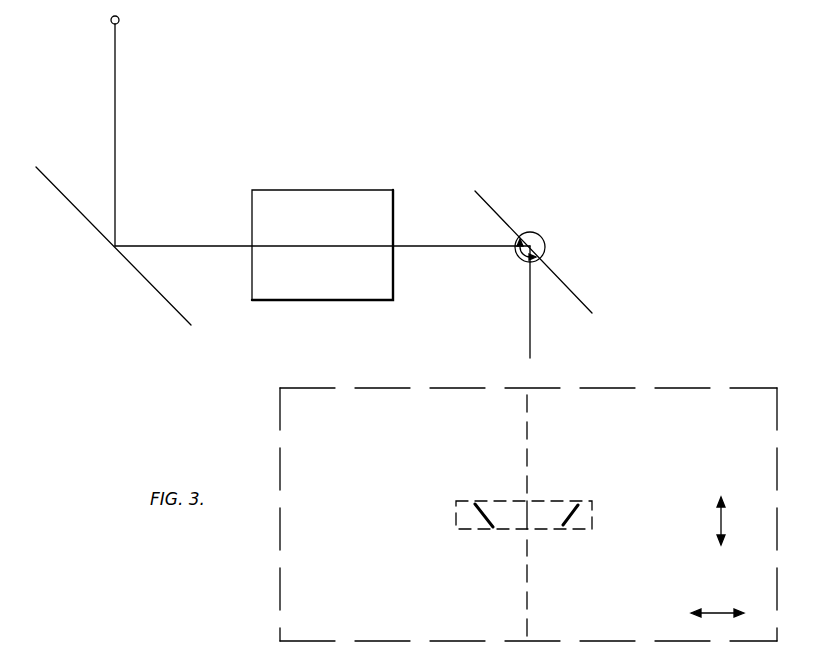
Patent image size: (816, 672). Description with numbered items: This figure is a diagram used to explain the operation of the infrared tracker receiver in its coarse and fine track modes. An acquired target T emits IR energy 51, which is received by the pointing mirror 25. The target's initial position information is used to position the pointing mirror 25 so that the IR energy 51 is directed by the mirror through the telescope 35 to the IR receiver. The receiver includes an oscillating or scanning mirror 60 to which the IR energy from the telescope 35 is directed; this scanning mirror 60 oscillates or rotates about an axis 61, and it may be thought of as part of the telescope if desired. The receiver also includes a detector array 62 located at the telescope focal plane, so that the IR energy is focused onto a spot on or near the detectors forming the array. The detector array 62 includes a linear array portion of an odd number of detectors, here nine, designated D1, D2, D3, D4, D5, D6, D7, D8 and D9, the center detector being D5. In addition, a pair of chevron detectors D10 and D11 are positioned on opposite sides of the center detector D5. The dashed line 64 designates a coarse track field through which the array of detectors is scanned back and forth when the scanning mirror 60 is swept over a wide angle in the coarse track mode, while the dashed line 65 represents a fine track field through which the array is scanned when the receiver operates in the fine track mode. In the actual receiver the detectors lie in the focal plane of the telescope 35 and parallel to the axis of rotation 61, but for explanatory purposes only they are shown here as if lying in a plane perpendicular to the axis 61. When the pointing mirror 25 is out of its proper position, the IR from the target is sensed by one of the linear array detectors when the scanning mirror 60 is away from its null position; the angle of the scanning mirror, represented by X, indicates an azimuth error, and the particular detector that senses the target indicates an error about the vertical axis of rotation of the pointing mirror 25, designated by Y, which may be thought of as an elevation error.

The acquired target T is at (119, 18).
The IR energy 51 is at (117, 119).
The pointing mirror 25 is at (64, 200).
The telescope 35 is at (321, 232).
The scanning mirror 60 is at (485, 199).
The axis of rotation 61 is at (536, 238).
The coarse track field 64 is at (340, 398).
The detector array 62 is at (603, 416).
The fine track field 65 is at (467, 497).
The detector D1 is at (526, 403).
The detector D2 is at (526, 430).
The detector D3 is at (526, 457).
The detector D4 is at (526, 484).
The center detector D5 is at (527, 515).
The detector D6 is at (528, 548).
The detector D7 is at (526, 573).
The detector D8 is at (526, 600).
The detector D9 is at (526, 627).
The chevron detector D10 is at (480, 524).
The chevron detector D11 is at (567, 518).
The elevation axis Y is at (730, 521).
The scanning mirror angle X is at (717, 603).